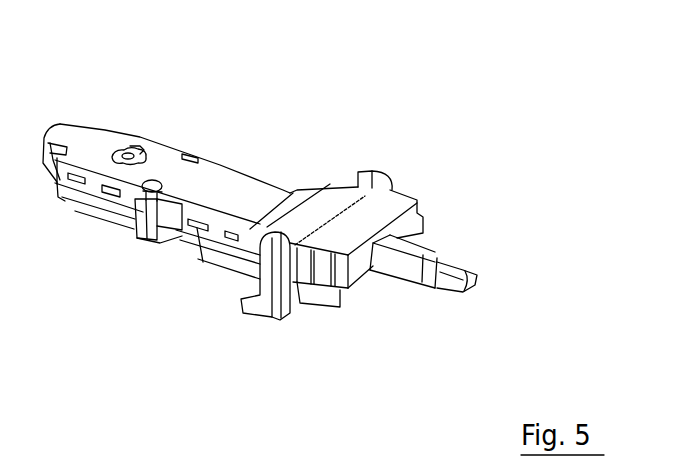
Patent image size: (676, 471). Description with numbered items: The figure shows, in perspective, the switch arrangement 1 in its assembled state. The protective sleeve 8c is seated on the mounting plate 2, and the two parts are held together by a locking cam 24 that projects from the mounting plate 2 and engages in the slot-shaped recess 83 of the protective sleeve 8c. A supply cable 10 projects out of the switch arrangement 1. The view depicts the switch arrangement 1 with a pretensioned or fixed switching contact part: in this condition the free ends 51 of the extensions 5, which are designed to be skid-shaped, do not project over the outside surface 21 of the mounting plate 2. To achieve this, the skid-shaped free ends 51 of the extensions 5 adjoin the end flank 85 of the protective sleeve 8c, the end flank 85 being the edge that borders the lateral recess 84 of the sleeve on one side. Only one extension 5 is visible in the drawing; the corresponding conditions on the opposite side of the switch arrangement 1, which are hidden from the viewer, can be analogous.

The switch arrangement 1 is at (303, 107).
The mounting plate 2 is at (333, 297).
The extension 5 is at (130, 208).
The protective sleeve 8c is at (218, 182).
The supply cable 10 is at (433, 251).
The outside surface 21 is at (203, 262).
The locking cam 24 is at (137, 141).
The free end 51 is at (153, 232).
The slot-shaped recess 83 is at (123, 143).
The lateral recess 84 is at (138, 225).
The end flank 85 is at (138, 228).